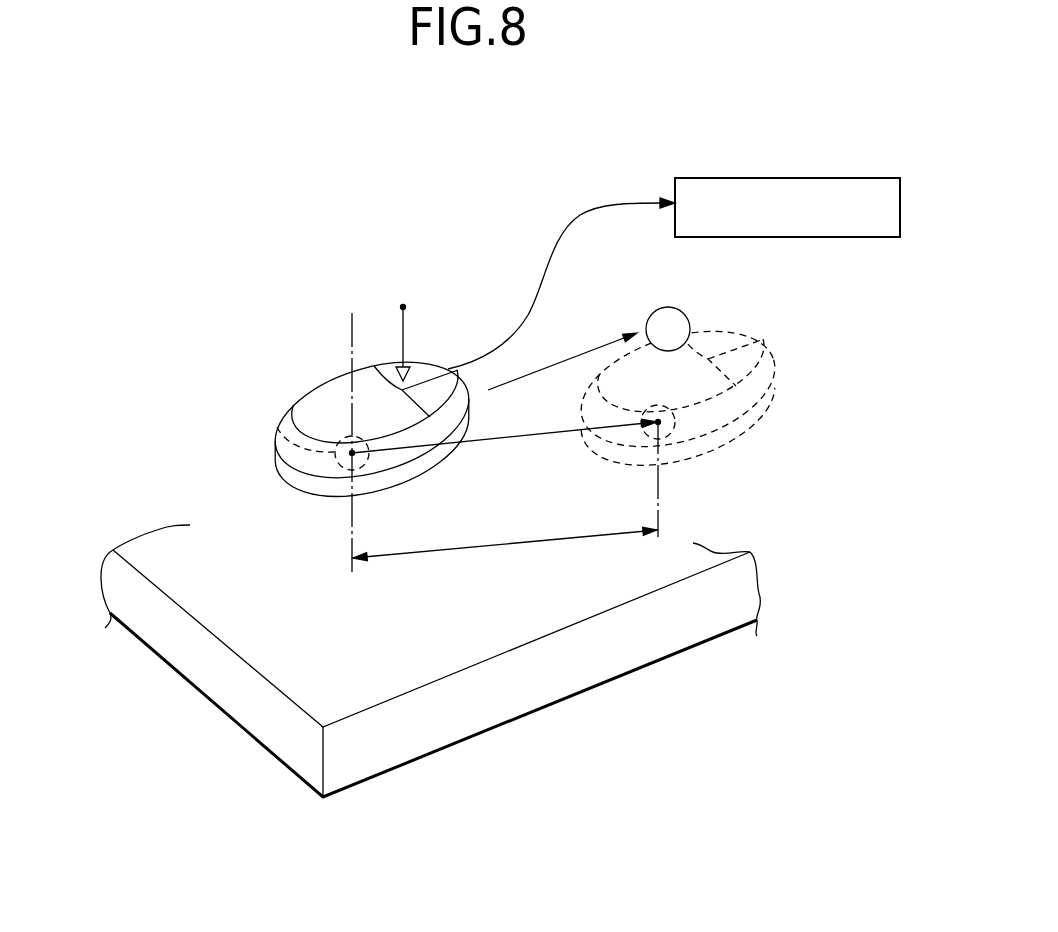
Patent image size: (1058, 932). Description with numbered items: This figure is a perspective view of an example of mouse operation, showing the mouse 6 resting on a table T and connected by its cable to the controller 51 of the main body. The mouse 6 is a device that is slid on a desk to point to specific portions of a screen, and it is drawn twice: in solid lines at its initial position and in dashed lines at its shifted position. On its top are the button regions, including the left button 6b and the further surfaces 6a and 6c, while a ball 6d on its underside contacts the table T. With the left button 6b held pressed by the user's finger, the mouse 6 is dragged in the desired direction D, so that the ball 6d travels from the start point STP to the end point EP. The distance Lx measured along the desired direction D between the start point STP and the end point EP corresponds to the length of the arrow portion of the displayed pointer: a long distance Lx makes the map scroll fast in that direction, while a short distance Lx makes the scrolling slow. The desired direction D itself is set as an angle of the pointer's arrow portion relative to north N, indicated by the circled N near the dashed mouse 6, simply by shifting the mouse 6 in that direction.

The mouse 6 is at (300, 478).
The left button 6a is at (333, 402).
The left button 6b is at (420, 367).
The wheel / center button 6c is at (437, 398).
The ball 6d is at (277, 427).
The controller 51 is at (847, 177).
The table T is at (540, 685).
The north N is at (589, 348).
The desired direction D is at (505, 438).
The distance Lx is at (505, 567).
The start point STP is at (351, 459).
The end point EP is at (657, 497).